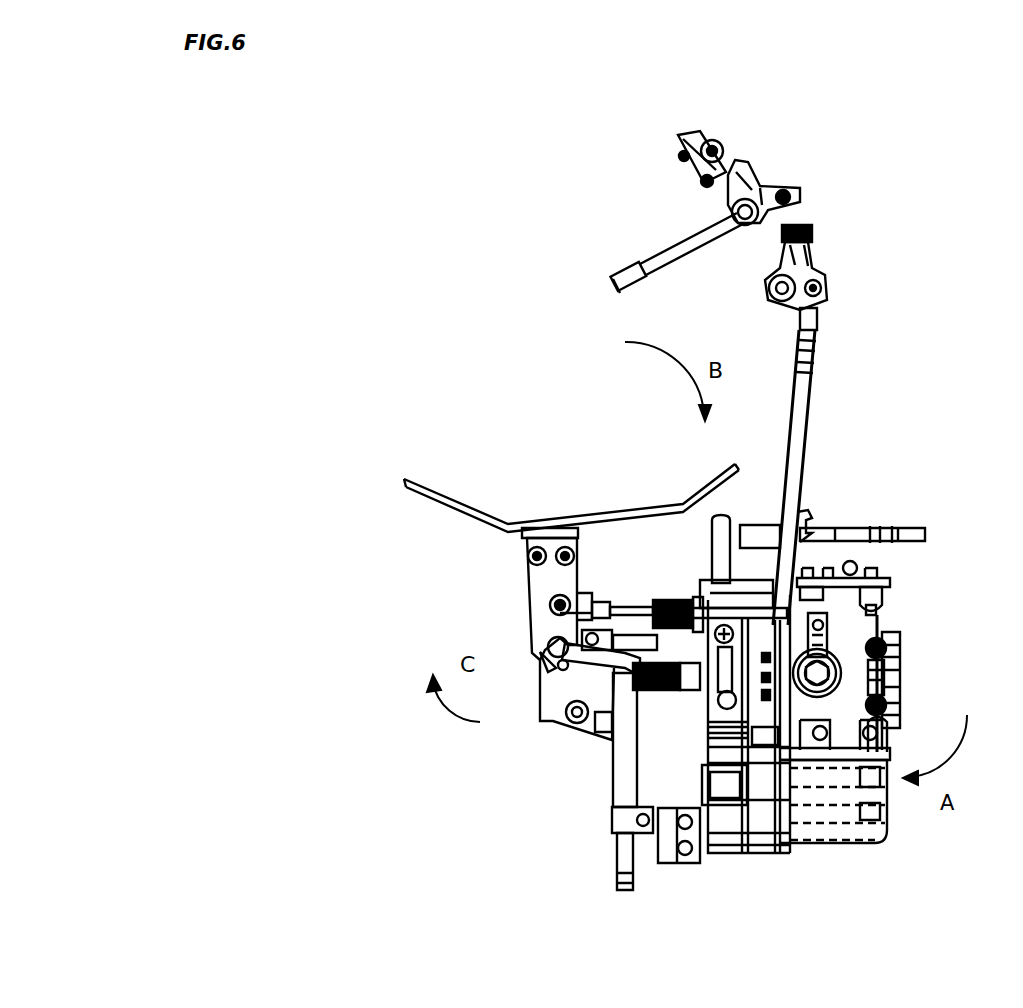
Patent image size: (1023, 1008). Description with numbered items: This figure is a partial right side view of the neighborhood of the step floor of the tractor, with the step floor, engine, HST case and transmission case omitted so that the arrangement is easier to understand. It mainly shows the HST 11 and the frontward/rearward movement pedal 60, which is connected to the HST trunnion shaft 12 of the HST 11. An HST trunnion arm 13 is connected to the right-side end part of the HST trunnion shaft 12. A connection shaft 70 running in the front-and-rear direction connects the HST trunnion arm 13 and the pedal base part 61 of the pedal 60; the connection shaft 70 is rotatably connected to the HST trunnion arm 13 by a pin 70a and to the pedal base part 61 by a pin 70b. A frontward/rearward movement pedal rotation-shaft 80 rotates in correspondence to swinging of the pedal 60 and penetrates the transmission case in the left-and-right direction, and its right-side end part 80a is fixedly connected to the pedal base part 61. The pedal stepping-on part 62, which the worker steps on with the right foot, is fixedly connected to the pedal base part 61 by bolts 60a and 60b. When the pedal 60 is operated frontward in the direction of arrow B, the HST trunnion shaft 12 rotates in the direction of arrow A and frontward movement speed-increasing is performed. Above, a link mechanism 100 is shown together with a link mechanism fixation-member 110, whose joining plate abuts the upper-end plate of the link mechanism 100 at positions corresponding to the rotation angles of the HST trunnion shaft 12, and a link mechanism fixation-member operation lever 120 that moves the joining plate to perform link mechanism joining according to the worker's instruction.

The link mechanism fixation-member 110 is at (770, 163).
The link mechanism fixation-member operation lever 120 is at (616, 270).
The link mechanism 100 is at (857, 407).
The frontward/rearward movement pedal 60 is at (735, 468).
The bolt 60a is at (567, 540).
The bolt 60b is at (536, 545).
The pedal base part 61 is at (527, 592).
The pedal stepping-on part 62 is at (520, 536).
The connection shaft 70 is at (640, 603).
The pin 70a is at (828, 625).
The pin 70b is at (563, 595).
The frontward/rearward movement pedal rotation-shaft 80 is at (553, 647).
The end part 80a is at (547, 663).
The HST 11 is at (836, 684).
The HST trunnion shaft 12 is at (807, 758).
The HST trunnion arm 13 is at (829, 652).